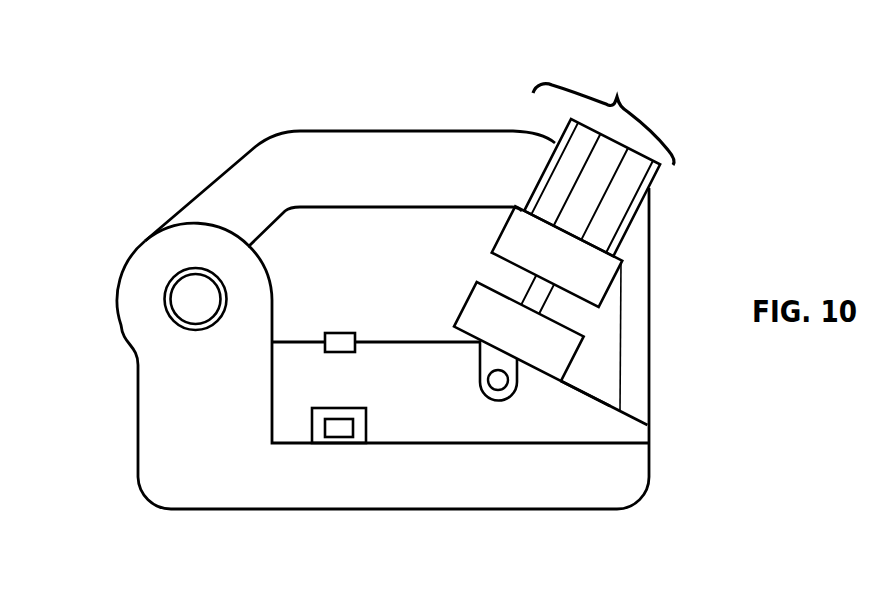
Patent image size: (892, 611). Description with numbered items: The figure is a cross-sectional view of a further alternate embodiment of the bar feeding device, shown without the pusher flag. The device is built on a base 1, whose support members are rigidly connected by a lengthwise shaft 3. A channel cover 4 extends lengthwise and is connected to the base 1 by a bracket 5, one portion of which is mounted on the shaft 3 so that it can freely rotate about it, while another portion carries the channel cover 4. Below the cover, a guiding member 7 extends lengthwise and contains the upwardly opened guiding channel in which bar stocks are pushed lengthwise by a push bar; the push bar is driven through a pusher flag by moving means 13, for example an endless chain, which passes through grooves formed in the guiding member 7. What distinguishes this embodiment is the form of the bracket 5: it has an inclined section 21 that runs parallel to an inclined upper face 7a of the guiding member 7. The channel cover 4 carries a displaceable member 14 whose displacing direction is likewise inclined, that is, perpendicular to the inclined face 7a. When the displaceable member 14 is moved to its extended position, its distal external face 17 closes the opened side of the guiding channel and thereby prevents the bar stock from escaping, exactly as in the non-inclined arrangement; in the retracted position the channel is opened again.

The base 1 is at (124, 515).
The bracket 5 is at (284, 100).
The shaft 3 is at (185, 283).
The inclined section 21 is at (617, 97).
The channel cover 4 is at (600, 280).
The displaceable member 14 is at (557, 347).
The guiding member 7 is at (623, 428).
The inclined upper face 7a is at (592, 400).
The external face 17 is at (480, 342).
The moving means 13 is at (342, 352).